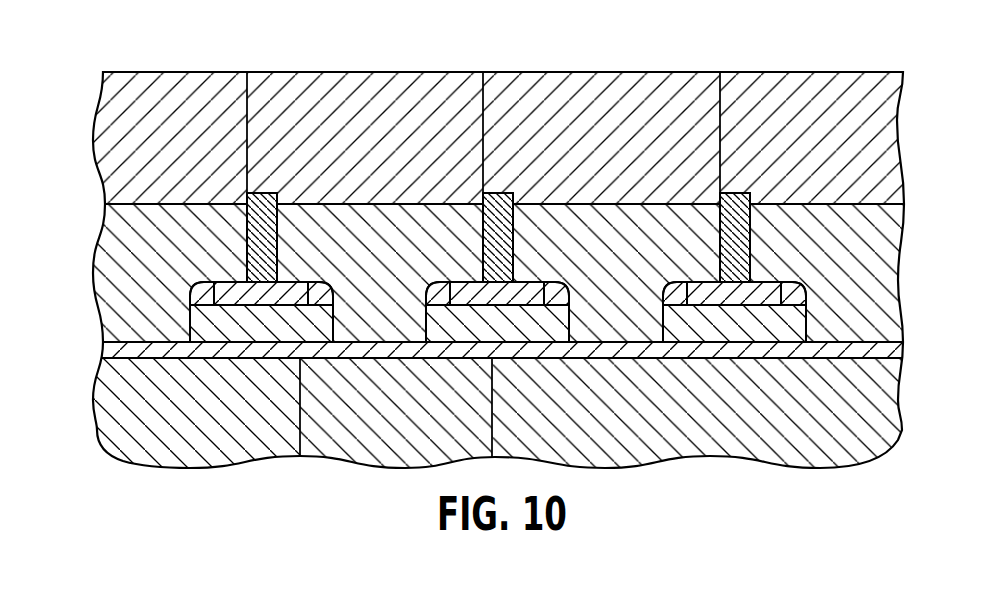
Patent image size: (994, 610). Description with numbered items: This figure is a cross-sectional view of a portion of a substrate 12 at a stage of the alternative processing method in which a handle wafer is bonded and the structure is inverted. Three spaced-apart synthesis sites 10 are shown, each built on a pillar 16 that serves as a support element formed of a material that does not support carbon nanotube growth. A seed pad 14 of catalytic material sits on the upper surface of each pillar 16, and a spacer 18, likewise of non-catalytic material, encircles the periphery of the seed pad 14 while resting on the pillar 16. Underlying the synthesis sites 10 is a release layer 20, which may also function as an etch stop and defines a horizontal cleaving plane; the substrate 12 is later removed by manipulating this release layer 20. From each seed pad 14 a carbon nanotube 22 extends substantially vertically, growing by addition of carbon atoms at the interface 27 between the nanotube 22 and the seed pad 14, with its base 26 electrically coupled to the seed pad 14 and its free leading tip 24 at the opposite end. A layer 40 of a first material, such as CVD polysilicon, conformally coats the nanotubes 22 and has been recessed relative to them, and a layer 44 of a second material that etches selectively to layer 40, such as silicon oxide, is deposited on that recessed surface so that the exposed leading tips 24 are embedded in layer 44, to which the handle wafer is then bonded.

The synthesis site 10 is at (188, 302).
The substrate 12 is at (183, 466).
The seed pad 14 is at (229, 282).
The pillar 16 is at (336, 325).
The spacer 18 is at (335, 296).
The release layer 20 is at (104, 350).
The carbon nanotube 22 is at (279, 200).
The leading tip 24 is at (262, 193).
The base 26 is at (263, 282).
The interface 27 is at (278, 243).
The layer of first material 40 is at (96, 273).
The layer of second material 44 is at (97, 145).